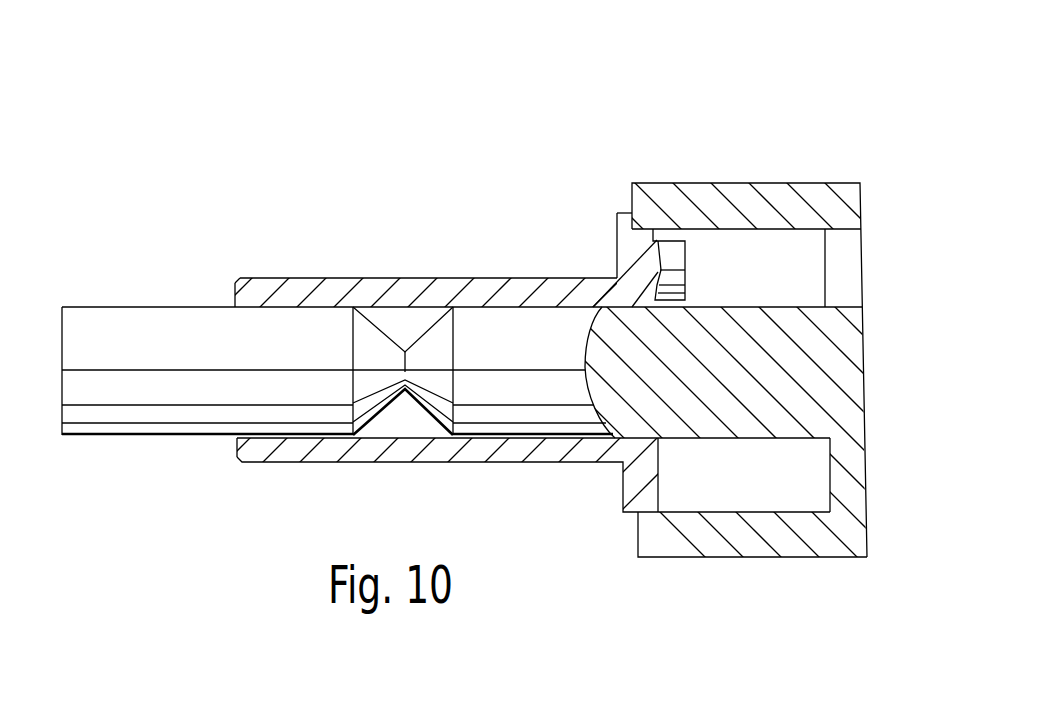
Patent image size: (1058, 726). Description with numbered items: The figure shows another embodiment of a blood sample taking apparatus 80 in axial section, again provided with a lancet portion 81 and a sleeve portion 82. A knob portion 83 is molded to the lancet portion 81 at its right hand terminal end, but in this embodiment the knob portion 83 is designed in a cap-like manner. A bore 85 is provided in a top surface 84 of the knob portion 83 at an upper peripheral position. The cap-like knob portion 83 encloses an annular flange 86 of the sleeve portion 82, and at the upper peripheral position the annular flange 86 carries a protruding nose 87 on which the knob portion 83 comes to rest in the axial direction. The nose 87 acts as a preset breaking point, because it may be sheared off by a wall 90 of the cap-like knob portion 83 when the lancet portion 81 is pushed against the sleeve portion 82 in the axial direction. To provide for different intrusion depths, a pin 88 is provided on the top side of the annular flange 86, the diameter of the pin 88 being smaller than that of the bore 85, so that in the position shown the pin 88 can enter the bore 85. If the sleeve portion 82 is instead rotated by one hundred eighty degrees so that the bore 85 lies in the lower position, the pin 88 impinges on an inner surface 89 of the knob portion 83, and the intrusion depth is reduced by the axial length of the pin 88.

The blood sample taking apparatus 80 is at (462, 227).
The lancet portion 81 is at (657, 298).
The sleeve portion 82 is at (496, 335).
The knob portion 83 is at (752, 605).
The top surface 84 is at (872, 443).
The bore 85 is at (836, 241).
The annular flange 86 is at (632, 247).
The protruding nose 87 is at (622, 207).
The pin 88 is at (672, 253).
The inner surface 89 is at (822, 472).
The wall 90 is at (752, 540).